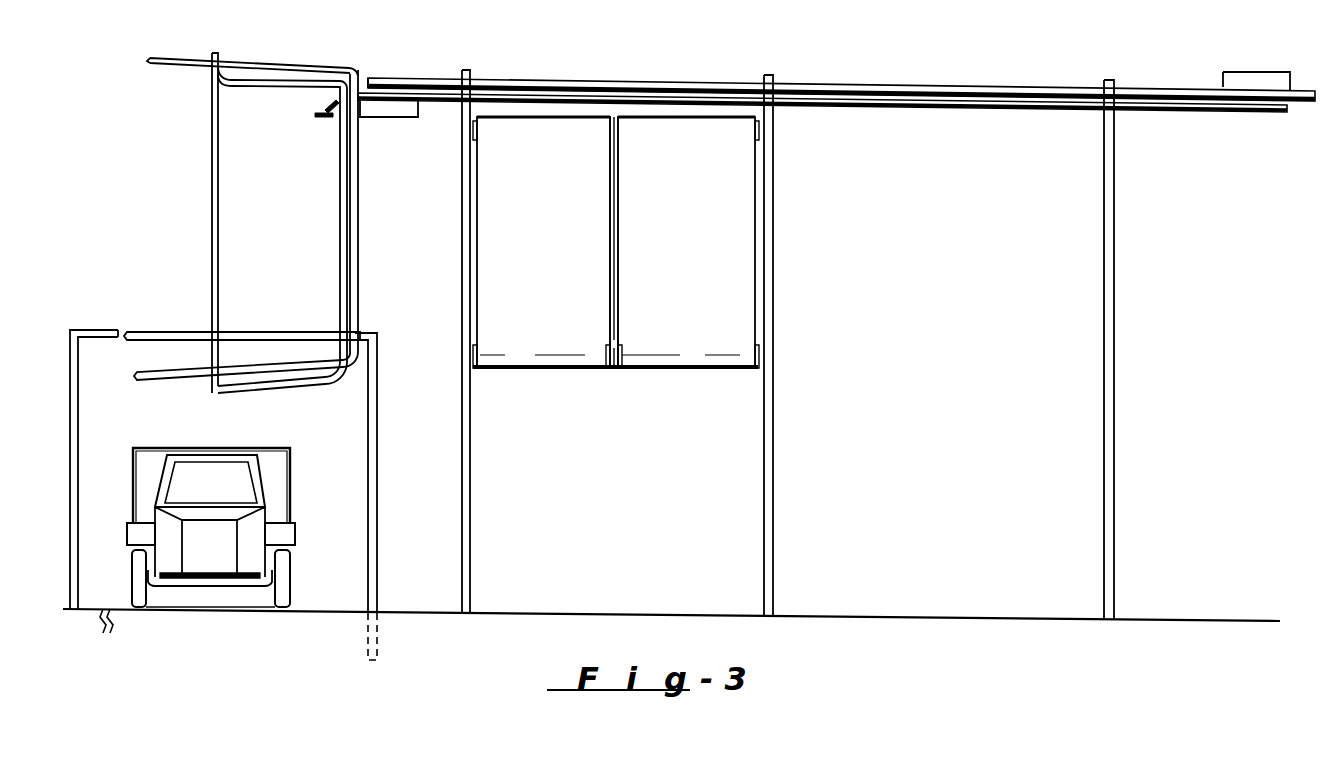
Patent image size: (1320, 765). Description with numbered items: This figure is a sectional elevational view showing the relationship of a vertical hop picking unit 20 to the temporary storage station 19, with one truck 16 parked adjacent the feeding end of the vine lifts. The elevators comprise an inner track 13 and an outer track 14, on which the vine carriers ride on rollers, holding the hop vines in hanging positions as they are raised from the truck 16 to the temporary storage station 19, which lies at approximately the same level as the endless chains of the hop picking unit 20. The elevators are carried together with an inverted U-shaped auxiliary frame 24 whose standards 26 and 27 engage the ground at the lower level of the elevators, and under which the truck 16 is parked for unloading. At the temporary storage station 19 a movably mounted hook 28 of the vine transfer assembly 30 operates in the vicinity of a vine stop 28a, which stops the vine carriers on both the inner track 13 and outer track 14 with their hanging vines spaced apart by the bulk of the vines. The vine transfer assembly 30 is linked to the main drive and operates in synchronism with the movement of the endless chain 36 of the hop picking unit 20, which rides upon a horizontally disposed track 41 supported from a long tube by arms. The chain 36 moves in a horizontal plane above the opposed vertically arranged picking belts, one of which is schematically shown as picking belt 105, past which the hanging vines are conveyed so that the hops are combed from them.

The inner track 13 is at (287, 65).
The outer track 14 is at (282, 79).
The truck 16 is at (282, 487).
The temporary storage station 19 is at (385, 73).
The hop picking unit 20 is at (717, 83).
The auxiliary frame 24 is at (198, 328).
The standard 26 is at (78, 434).
The standard 27 is at (373, 484).
The hook 28 is at (330, 103).
The vine stop 28a is at (328, 119).
The vine transfer assembly 30 is at (339, 60).
The endless chain 36 is at (448, 104).
The track 41 is at (430, 97).
The picking belt 105 is at (706, 306).